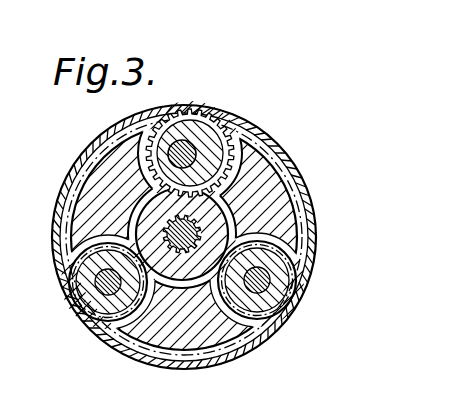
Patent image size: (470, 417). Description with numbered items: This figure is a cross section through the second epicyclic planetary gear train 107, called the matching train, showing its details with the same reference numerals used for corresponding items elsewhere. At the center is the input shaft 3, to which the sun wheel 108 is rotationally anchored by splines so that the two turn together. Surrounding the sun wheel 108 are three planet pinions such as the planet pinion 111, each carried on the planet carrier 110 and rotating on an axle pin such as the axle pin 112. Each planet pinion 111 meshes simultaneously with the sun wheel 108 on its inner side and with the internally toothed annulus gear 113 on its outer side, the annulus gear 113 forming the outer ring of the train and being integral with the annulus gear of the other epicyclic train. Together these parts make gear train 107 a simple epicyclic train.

The second epicyclic planetary gear train 107 is at (322, 212).
The internally toothed annulus gear 113 is at (298, 178).
The sun wheel 108 is at (270, 338).
The planet carrier 110 is at (282, 226).
The planet pinion 111 is at (187, 132).
The axle pin 112 is at (197, 153).
The input shaft 3 is at (97, 336).